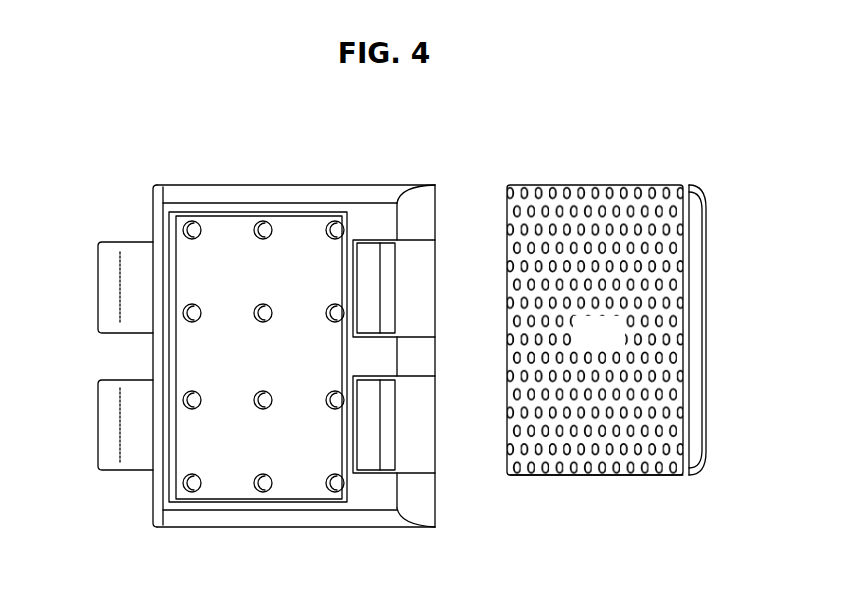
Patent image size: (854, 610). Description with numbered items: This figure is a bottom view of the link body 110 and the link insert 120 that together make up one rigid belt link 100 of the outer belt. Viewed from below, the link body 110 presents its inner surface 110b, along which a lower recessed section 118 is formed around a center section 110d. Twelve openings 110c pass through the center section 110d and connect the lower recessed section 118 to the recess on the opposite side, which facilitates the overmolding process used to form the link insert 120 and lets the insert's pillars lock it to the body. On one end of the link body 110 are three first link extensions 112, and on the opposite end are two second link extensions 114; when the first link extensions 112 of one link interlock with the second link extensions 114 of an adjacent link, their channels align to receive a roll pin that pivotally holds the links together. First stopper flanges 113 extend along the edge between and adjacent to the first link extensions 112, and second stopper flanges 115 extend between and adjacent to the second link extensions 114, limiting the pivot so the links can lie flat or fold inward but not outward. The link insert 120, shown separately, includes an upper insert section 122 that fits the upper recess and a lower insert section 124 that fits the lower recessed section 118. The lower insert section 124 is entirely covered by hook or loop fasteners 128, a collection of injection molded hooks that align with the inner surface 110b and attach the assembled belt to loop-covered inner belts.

The belt link 100 is at (286, 121).
The link body 110 is at (207, 185).
The inner surface 110b is at (365, 218).
The openings 110c is at (200, 232).
The center section 110d is at (308, 460).
The first link extensions 112 is at (423, 217).
The first stopper flanges 113 is at (388, 311).
The second link extensions 114 is at (130, 287).
The second stopper flanges 115 is at (153, 213).
The lower recessed section 118 is at (180, 462).
The link insert 120 is at (602, 185).
The upper insert section 122 is at (692, 328).
The lower insert section 124 is at (677, 475).
The hook or loop fasteners 128 is at (615, 341).